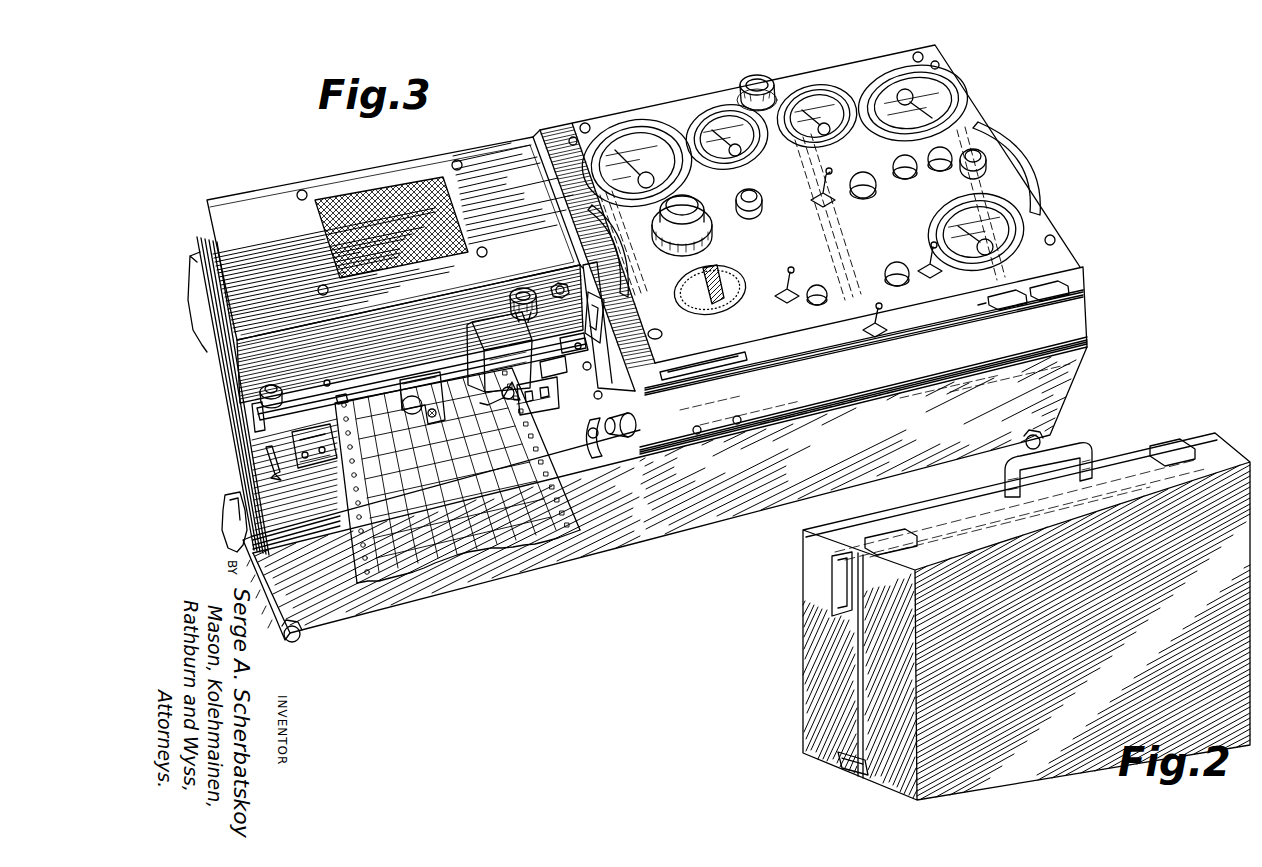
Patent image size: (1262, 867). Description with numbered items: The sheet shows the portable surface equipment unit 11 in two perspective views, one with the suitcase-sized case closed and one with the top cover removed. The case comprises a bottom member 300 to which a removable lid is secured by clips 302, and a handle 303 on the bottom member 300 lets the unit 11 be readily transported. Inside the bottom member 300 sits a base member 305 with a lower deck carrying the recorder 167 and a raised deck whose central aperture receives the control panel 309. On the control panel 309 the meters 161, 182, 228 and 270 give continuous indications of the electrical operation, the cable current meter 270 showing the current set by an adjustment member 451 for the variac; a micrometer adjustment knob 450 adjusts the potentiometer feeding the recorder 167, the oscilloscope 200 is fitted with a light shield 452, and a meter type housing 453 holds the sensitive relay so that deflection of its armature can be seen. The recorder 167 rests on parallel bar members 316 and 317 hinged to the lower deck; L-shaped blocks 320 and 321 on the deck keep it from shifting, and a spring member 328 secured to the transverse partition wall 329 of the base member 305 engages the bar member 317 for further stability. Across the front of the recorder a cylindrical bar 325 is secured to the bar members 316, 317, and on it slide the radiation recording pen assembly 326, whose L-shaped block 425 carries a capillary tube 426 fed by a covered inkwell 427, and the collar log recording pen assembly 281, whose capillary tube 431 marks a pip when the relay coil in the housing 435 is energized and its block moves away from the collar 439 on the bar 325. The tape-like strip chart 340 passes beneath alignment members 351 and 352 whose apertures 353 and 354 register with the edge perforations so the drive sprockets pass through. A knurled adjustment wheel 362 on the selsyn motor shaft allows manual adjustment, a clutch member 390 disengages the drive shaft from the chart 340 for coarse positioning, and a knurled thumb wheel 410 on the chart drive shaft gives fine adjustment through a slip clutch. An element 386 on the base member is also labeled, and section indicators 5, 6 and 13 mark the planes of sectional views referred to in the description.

In FIG. 3, the recorder 167 is at (302, 195).
In FIG. 3, the meter 161 is at (636, 140).
In FIG. 3, the cable current meter 270 is at (712, 108).
In FIG. 3, the light shield 452 is at (757, 86).
In FIG. 3, the oscilloscope 200 is at (767, 98).
In FIG. 3, the meter 228 is at (817, 100).
In FIG. 3, the meter type housing 453 is at (940, 100).
In FIG. 3, the meter 182 is at (1000, 230).
In FIG. 3, the control panel 309 is at (1060, 256).
In FIG. 3, the base member 305 is at (1102, 316).
In FIG. 3, the micrometer adjustment knob 450 is at (695, 212).
In FIG. 3, the adjustment member 451 is at (716, 283).
In FIG. 3, the housing 435 is at (505, 320).
In FIG. 3, the pen carriage 13 is at (466, 350).
In FIG. 3, the L-shaped block 321 is at (576, 343).
In FIG. 3, the spring member 328 is at (603, 322).
In FIG. 3, the transverse partition wall 329 is at (661, 334).
In FIG. 3, the L-shaped block 425 is at (430, 375).
In FIG. 3, the radiation recording pen assembly 326 is at (408, 380).
In FIG. 3, the cylindrical bar 325 is at (340, 396).
In FIG. 3, the L-shaped block 320 is at (283, 396).
In FIG. 3, the bar member 316 is at (258, 420).
In FIG. 3, the section line 5- 5 is at (226, 465).
In FIG. 3, the collar 439 is at (522, 380).
In FIG. 3, the bar member 317 is at (548, 374).
In FIG. 3, the collar log recording pen assembly 281 is at (594, 395).
In FIG. 3, the alignment member 352 is at (552, 410).
In FIG. 3, the aperture 354 is at (515, 410).
In FIG. 3, the capillary tube 431 is at (498, 402).
In FIG. 3, the covered inkwell 427 is at (410, 414).
In FIG. 3, the capillary tube 426 is at (434, 418).
In FIG. 3, the aperture 353 is at (337, 442).
In FIG. 3, the alignment member 351 is at (322, 465).
In FIG. 3, the knurled thumb wheel 410 is at (278, 476).
In FIG. 3, the knurled adjustment wheel 362 is at (593, 458).
In FIG. 3, the clutch member 390 is at (623, 440).
In FIG. 3, the terminal strip 386 is at (710, 362).
In FIG. 3, the section line 6- 6 is at (553, 424).
In FIG. 3, the clips 302 is at (226, 532).
In FIG. 2, the clips 302 is at (890, 538).
In FIG. 3, the bottom member 300 is at (644, 545).
In FIG. 2, the bottom member 300 is at (1125, 450).
In FIG. 3, the strip chart 340 is at (531, 545).
In FIG. 2, the handle 303 is at (1062, 452).
In FIG. 2, the portable surface equipment unit 11 is at (1182, 444).